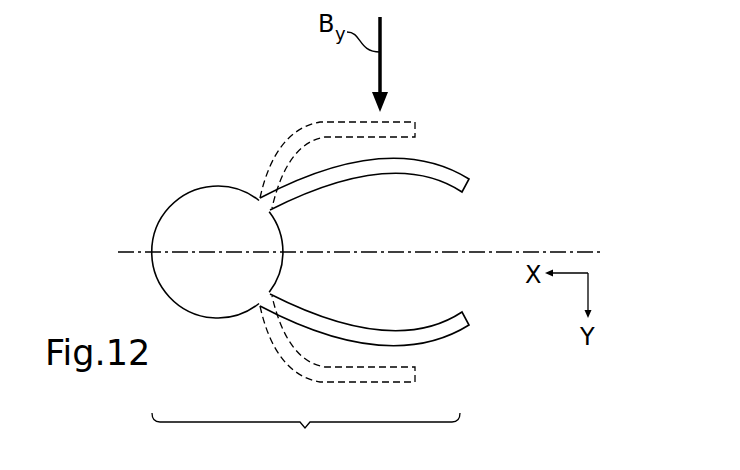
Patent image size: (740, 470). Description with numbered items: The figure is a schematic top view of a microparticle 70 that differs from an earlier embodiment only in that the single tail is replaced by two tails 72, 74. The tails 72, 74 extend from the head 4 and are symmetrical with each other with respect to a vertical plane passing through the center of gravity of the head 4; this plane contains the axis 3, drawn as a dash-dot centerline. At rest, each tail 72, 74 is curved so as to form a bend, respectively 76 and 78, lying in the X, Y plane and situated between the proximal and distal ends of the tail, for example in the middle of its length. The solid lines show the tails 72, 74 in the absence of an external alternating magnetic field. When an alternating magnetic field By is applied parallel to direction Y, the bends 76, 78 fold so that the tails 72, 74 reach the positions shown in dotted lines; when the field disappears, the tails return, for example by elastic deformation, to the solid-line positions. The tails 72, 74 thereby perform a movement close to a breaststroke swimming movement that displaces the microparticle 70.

The axis 3 is at (577, 252).
The head 4 is at (230, 180).
The microparticle 70 is at (306, 437).
The tail 72 is at (454, 167).
The tail 74 is at (461, 340).
The bend 76 is at (390, 158).
The bend 78 is at (390, 346).